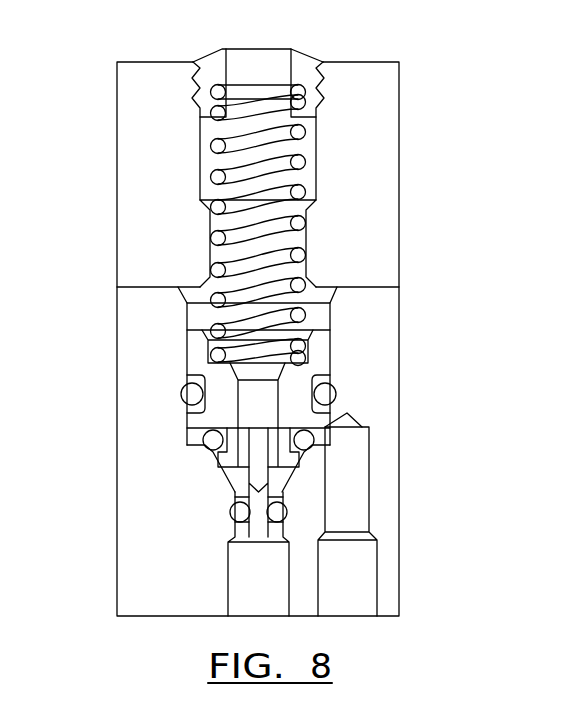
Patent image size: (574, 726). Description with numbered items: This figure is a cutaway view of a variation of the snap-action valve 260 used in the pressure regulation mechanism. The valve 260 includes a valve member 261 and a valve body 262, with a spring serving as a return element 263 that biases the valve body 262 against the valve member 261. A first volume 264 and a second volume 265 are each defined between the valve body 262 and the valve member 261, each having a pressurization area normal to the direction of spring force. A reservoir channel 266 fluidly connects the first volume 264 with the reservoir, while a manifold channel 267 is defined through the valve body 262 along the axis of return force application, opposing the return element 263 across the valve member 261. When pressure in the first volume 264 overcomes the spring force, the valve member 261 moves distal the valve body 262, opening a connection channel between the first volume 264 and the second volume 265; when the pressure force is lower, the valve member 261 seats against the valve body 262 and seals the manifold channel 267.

The valve 260 is at (458, 66).
The valve member 261 is at (223, 400).
The valve body 262 is at (133, 383).
The return element 263 is at (300, 131).
The first volume 264 is at (323, 432).
The second volume 265 is at (287, 478).
The reservoir channel 266 is at (360, 452).
The manifold channel 267 is at (232, 528).